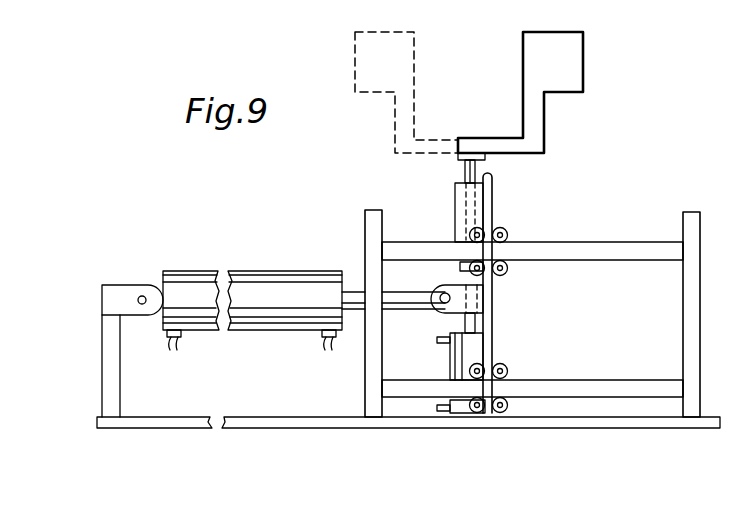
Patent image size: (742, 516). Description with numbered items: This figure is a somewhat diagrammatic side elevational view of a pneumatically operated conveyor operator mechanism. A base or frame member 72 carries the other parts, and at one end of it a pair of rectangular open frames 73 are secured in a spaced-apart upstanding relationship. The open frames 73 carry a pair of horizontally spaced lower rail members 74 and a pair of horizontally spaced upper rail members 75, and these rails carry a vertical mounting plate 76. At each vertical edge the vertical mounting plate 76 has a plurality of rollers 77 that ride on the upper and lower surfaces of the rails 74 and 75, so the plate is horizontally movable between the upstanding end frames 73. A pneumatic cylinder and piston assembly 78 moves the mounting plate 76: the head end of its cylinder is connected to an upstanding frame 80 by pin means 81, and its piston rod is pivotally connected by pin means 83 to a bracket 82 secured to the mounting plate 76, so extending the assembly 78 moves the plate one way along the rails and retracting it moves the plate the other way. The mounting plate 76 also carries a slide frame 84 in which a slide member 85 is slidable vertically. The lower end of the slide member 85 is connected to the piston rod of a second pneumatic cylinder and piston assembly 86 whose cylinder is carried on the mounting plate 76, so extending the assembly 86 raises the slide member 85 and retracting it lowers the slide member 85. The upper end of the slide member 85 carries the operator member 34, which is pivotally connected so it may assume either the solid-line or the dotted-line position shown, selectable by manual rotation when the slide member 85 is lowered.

The operator member 34 is at (546, 120).
The base or frame member 72 is at (291, 430).
The rectangular open frames 73 is at (365, 211).
The lower rail members 74 is at (582, 380).
The upper rail members 75 is at (580, 242).
The vertical mounting plate 76 is at (492, 198).
The rollers 77 is at (469, 236).
The pneumatic cylinder and piston assembly 78 is at (247, 270).
The upstanding frame 80 is at (110, 285).
The pin means 81 is at (149, 294).
The bracket 82 is at (440, 310).
The pin means 83 is at (442, 295).
The slide frame 84 is at (455, 203).
The slide member 85 is at (465, 167).
The second pneumatic cylinder and piston assembly 86 is at (445, 363).